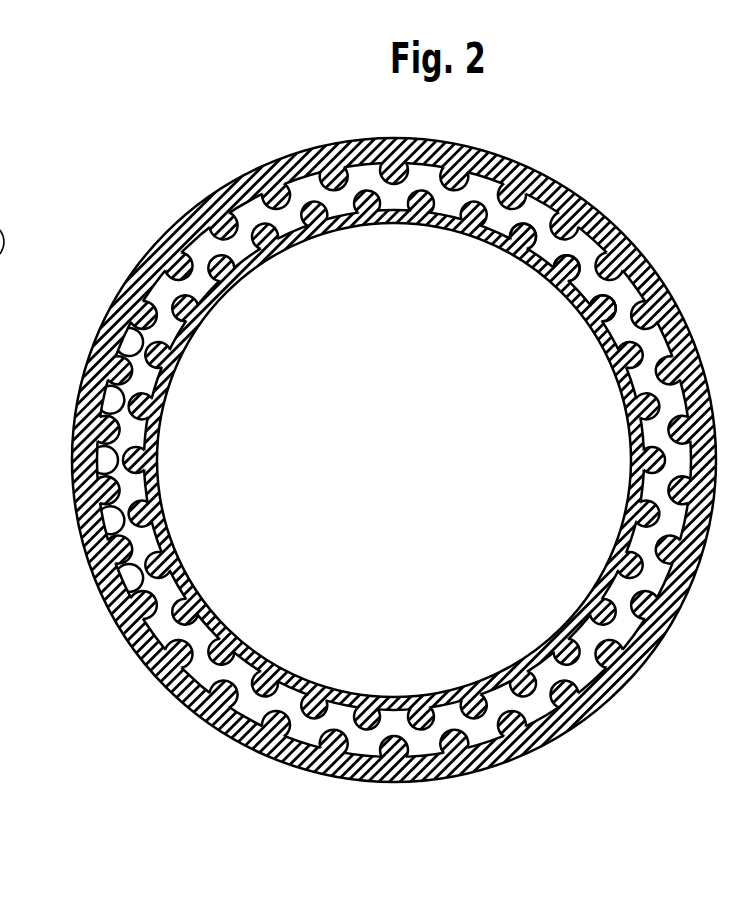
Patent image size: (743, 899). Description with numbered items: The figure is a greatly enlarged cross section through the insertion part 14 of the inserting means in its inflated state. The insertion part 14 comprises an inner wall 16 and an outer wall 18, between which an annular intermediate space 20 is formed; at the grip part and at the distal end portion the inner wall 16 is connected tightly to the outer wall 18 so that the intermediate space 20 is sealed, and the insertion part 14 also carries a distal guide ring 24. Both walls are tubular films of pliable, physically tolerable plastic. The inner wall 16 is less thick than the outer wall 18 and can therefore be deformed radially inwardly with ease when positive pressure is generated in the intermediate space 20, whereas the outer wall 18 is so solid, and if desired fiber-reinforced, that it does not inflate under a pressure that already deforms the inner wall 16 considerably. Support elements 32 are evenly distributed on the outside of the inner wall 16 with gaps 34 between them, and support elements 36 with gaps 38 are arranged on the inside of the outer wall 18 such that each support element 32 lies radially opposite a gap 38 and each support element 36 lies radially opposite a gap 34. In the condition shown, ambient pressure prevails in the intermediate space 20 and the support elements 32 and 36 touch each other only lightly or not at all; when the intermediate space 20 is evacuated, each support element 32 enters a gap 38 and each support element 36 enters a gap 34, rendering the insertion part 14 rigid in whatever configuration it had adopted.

The insertion part 14 is at (600, 182).
The inner wall 16 is at (182, 330).
The outer wall 18 is at (181, 223).
The annular intermediate space 20 is at (238, 239).
The distal guide ring 24 is at (0, 200).
The support elements 32 is at (460, 229).
The gaps 34 is at (567, 292).
The support elements 36 is at (273, 162).
The gaps 38 is at (76, 400).